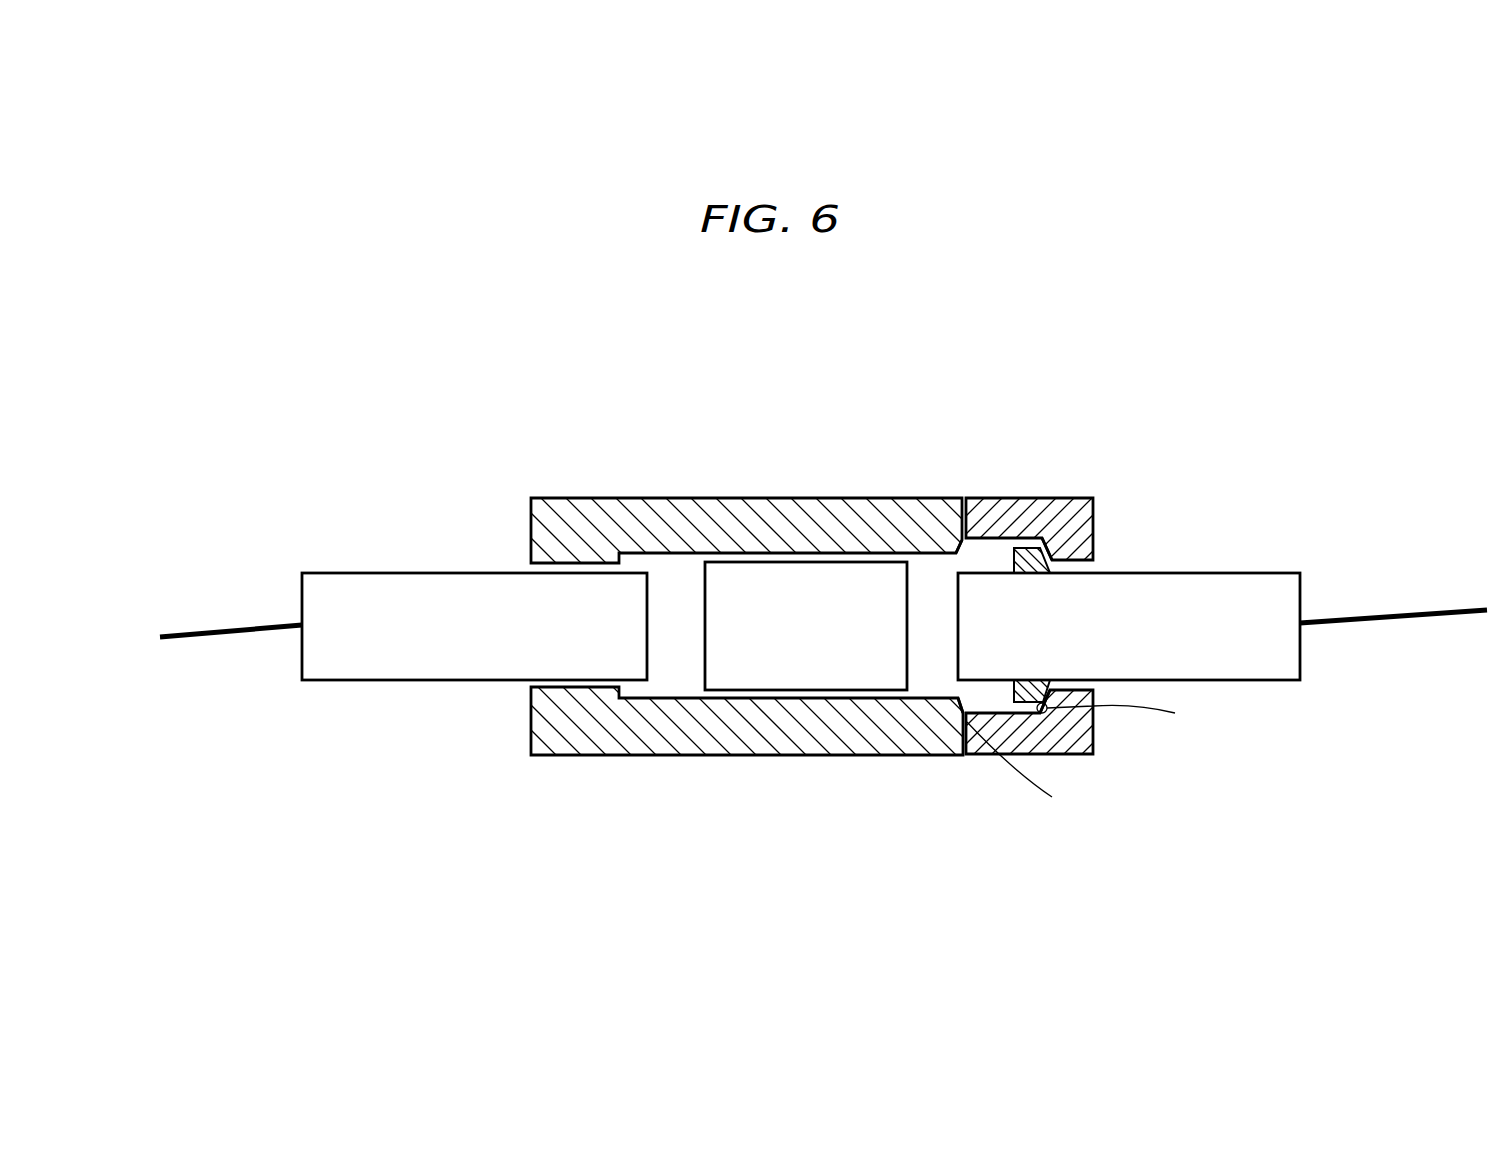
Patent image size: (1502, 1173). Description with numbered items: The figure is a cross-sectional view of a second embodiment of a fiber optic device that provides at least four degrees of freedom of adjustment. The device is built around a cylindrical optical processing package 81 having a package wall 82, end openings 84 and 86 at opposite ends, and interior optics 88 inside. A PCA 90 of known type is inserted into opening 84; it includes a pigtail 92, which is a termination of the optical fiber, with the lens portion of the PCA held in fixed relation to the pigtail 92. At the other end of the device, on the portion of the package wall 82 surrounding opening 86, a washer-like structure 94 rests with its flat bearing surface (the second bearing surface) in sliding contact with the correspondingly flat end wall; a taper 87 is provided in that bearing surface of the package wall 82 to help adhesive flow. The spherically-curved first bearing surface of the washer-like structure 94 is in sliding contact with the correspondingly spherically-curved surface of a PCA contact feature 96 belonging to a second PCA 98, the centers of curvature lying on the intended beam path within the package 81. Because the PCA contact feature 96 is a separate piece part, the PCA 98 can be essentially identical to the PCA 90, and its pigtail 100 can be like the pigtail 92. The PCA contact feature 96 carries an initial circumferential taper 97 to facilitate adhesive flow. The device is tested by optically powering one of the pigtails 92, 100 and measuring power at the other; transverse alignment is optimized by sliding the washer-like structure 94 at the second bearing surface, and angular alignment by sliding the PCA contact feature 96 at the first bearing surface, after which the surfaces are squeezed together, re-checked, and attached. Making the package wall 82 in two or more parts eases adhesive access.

The optical processing package 81 is at (776, 273).
The package wall 82 is at (597, 742).
The end opening 84 is at (525, 687).
The end opening 86 is at (946, 656).
The taper 87 is at (960, 498).
The interior optics 88 is at (760, 675).
The PCA 90 is at (366, 573).
The pigtail 92 is at (205, 625).
The washer-like structure 94 is at (1087, 540).
The PCA contact feature 96 is at (1022, 547).
The circumferential taper 97 is at (1208, 770).
The PCA 98 is at (1280, 572).
The pigtail 100 is at (1450, 610).